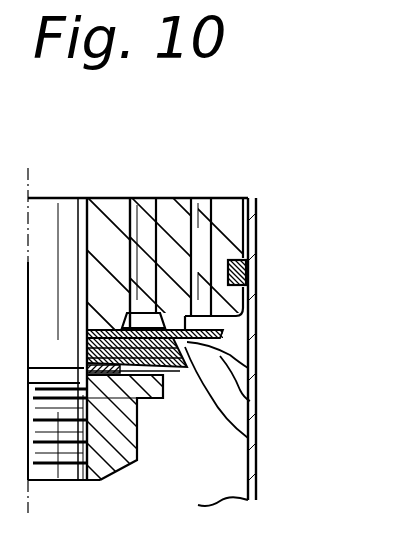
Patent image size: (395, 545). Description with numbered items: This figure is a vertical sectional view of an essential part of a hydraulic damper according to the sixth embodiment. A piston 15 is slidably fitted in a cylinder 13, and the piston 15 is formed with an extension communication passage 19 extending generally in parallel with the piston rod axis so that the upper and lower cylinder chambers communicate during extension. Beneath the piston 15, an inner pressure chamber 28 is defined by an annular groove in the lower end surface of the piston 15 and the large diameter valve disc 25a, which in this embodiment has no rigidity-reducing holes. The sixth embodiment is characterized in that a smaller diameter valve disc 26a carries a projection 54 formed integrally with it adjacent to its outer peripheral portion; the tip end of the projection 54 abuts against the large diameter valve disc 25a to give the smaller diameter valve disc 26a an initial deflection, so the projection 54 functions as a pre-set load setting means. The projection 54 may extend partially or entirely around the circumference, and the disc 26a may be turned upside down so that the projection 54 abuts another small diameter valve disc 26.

The cylinder 13 is at (253, 484).
The piston 15 is at (240, 212).
The extension communication passage 19 is at (146, 258).
The inner pressure chamber 28 is at (165, 321).
The large diameter valve disc 25a is at (230, 331).
The projection 54 is at (250, 370).
The smaller diameter valve disc 26a is at (253, 403).
The smaller diameter valve disc 26 is at (248, 440).